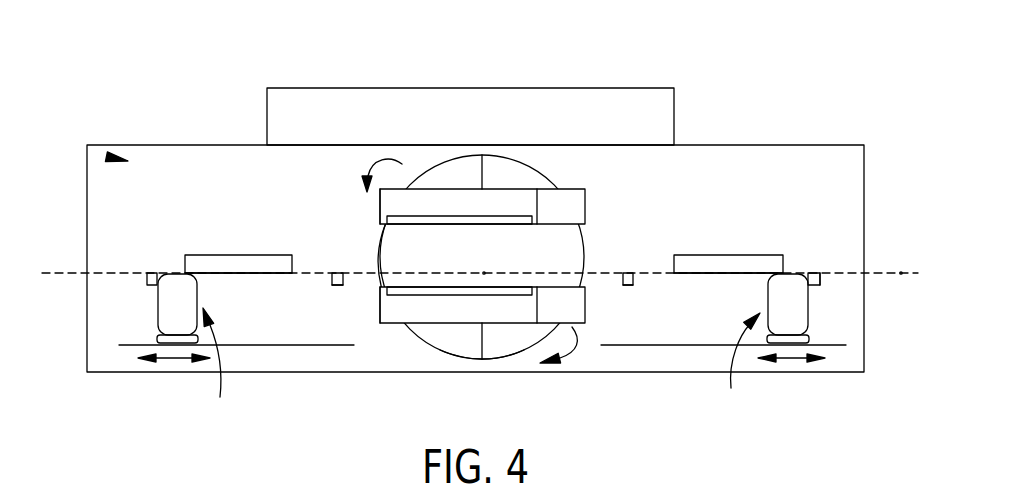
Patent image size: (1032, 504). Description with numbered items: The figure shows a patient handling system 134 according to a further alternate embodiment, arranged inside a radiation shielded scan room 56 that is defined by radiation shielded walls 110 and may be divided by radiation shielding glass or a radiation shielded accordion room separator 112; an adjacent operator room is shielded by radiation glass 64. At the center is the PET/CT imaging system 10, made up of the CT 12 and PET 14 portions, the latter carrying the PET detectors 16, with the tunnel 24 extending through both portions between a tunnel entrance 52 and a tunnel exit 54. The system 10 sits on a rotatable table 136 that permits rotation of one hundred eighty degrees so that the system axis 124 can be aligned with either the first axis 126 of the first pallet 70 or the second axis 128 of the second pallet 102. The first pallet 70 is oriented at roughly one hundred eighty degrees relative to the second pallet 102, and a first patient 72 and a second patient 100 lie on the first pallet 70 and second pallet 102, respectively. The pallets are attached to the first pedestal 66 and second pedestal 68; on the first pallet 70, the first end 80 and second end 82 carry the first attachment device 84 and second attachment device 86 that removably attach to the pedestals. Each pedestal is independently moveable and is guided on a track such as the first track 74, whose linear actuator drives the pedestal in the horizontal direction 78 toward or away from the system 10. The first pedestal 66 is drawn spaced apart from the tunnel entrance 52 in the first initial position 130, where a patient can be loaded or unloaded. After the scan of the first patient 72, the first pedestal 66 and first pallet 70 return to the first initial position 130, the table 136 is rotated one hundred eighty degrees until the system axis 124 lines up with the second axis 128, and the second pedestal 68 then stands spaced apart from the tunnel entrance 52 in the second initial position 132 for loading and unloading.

The PET/CT imaging system 10 is at (476, 265).
The CT portion 12 is at (476, 265).
The PET portion 14 is at (380, 210).
The PET detectors 16 is at (416, 222).
The tunnel 24 is at (458, 294).
The tunnel entrance 52 is at (562, 248).
The tunnel exit 54 is at (394, 245).
The scan room 56 is at (841, 167).
The radiation glass 64 is at (516, 147).
The first pedestal 66 is at (808, 310).
The second pedestal 68 is at (155, 308).
The first patient pallet 70 is at (694, 274).
The first patient 72 is at (724, 261).
The first track 74 is at (354, 346).
The horizontal direction 78 is at (176, 358).
The first end of first pallet 80 is at (828, 272).
The second end of first pallet 82 is at (388, 265).
The first attachment device 84 is at (487, 239).
The second attachment device 86 is at (123, 273).
The second patient 100 is at (238, 313).
The second pallet 102 is at (207, 274).
The radiation shielded walls 110 is at (476, 231).
The radiation shielded room separator 112 is at (484, 177).
The system axis 124 is at (487, 275).
The first axis 126 is at (901, 277).
The second axis 128 is at (486, 272).
The first initial position 130 is at (739, 371).
The second initial position 132 is at (218, 372).
The patient handling system 134 is at (108, 158).
The rotatable table 136 is at (460, 337).